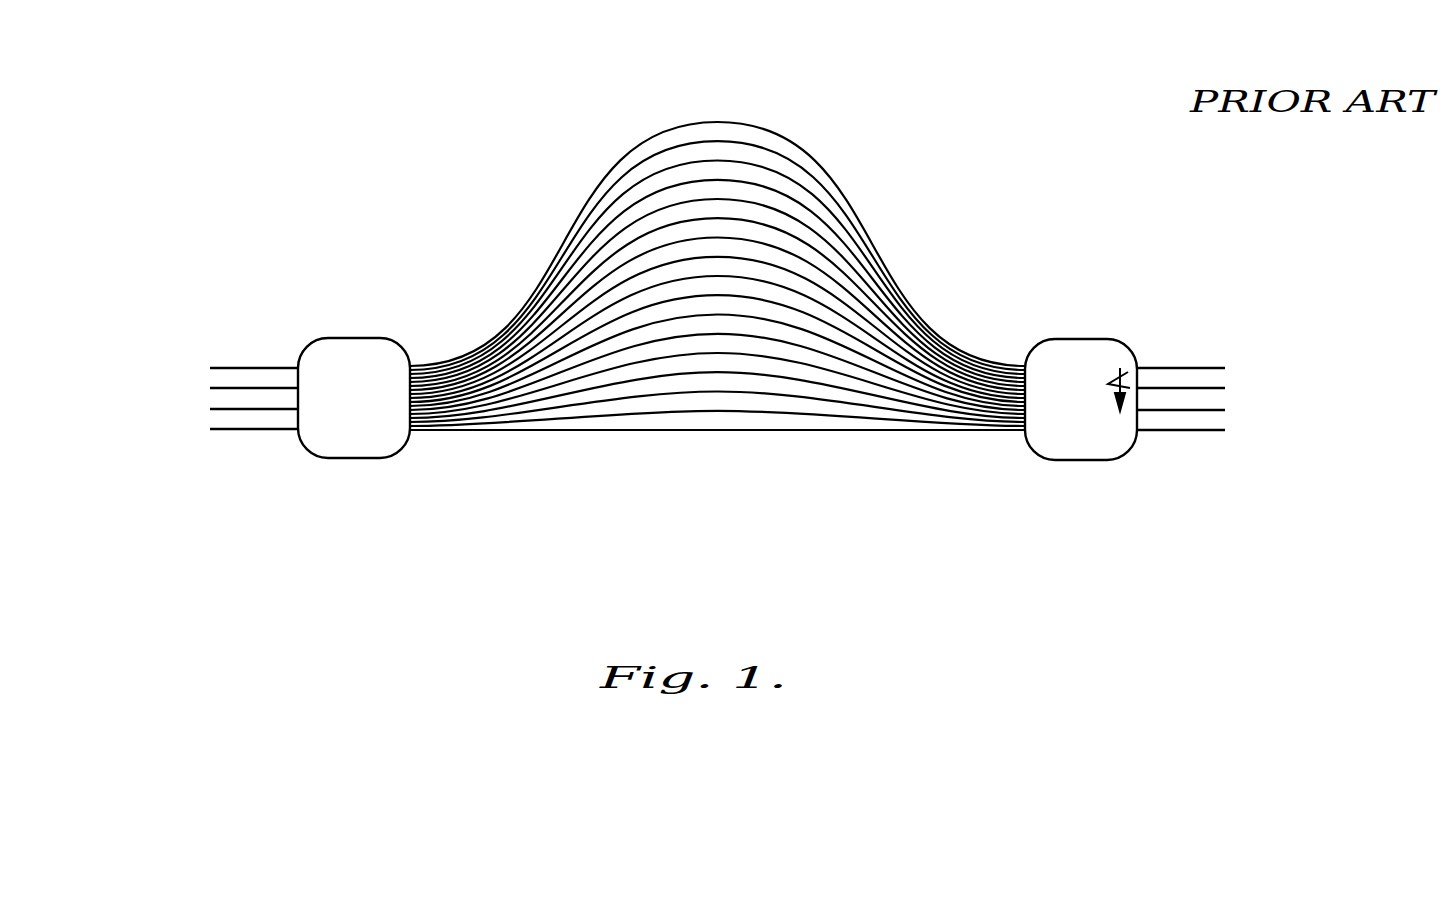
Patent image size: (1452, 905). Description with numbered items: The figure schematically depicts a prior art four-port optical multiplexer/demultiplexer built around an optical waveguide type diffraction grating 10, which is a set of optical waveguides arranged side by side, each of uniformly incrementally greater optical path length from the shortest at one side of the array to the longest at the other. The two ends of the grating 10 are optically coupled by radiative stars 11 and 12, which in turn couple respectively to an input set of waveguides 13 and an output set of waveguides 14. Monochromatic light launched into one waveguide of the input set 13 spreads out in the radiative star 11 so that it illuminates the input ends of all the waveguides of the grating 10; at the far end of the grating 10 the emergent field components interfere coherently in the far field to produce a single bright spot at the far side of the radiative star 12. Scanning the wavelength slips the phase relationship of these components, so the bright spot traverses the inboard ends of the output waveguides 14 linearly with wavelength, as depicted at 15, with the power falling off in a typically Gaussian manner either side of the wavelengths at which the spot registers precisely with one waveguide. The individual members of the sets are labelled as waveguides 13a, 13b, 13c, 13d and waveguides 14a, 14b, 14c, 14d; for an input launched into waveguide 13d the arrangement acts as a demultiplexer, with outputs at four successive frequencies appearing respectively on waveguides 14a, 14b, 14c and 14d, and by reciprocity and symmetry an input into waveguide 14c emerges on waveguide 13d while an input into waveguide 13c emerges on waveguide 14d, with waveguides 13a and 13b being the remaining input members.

The optical waveguide grating 10 is at (705, 208).
The radiative star 11 is at (378, 377).
The radiative star 12 is at (1065, 365).
The input set of waveguides 13 is at (207, 372).
The waveguide 13a is at (220, 367).
The waveguide 13b is at (212, 387).
The waveguide 13c is at (210, 410).
The waveguide 13d is at (222, 432).
The output set of waveguides 14 is at (1246, 375).
The waveguide 14a is at (1222, 368).
The waveguide 14b is at (1225, 388).
The waveguide 14c is at (1225, 410).
The waveguide 14d is at (1210, 430).
The bright spot traverse depiction 15 is at (1115, 373).